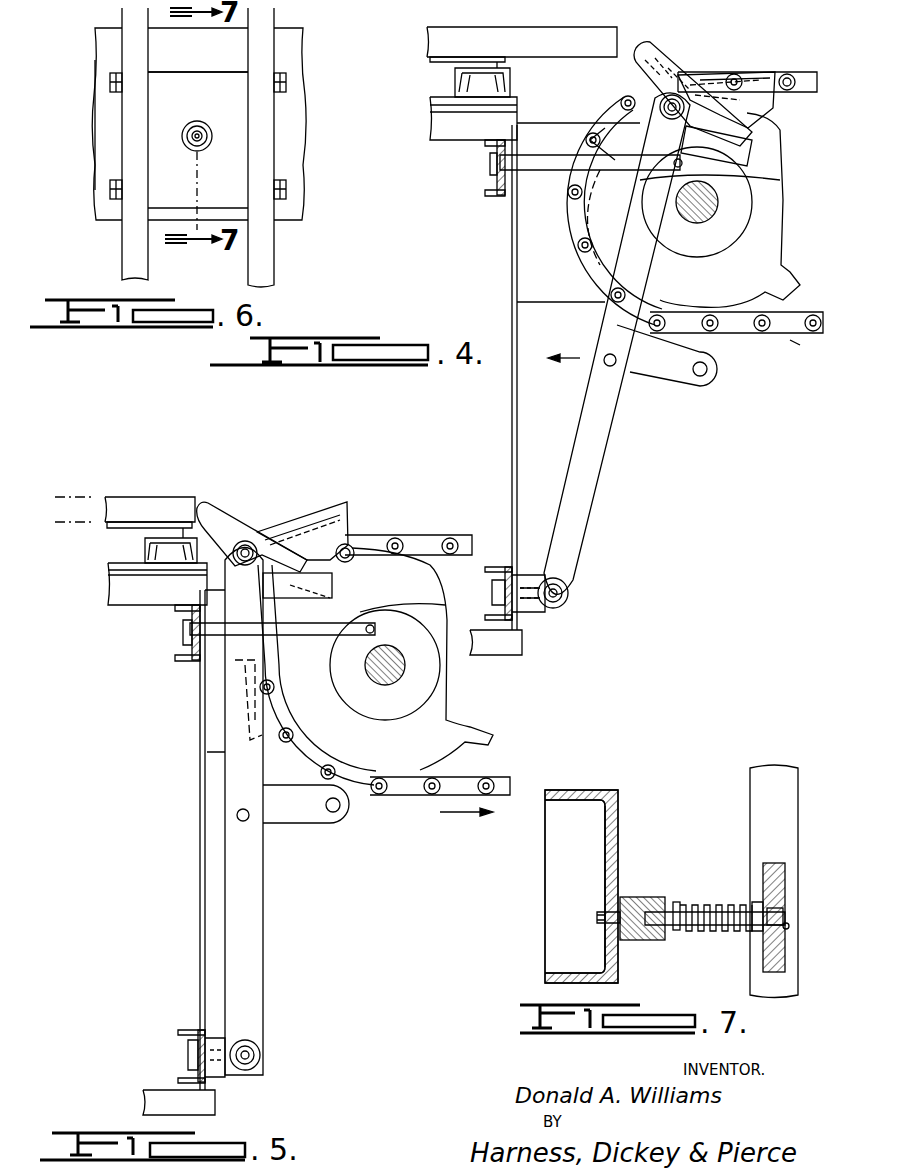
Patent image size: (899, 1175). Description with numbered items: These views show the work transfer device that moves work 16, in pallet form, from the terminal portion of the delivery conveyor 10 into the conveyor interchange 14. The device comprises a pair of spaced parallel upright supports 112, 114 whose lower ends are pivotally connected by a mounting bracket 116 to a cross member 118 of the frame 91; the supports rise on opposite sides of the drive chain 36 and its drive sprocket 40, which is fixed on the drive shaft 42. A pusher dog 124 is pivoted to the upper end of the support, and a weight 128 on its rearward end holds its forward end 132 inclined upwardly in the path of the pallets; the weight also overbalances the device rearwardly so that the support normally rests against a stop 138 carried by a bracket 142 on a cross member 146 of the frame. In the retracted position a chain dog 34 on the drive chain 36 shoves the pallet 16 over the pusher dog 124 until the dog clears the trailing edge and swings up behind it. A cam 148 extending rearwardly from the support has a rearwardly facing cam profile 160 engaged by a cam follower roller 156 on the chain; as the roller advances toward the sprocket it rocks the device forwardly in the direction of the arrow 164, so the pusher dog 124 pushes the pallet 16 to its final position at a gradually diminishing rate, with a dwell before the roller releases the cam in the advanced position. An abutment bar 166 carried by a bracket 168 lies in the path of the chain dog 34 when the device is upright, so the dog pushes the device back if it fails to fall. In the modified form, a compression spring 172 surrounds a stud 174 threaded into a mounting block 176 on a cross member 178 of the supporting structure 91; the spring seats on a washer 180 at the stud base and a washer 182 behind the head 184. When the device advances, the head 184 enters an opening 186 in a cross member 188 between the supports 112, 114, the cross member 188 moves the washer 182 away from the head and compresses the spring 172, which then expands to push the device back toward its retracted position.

In FIG. 4, the delivery conveyor 10 is at (800, 345).
In FIG. 4, the conveyor interchange 14 is at (420, 30).
In FIG. 5, the conveyor interchange 14 is at (110, 482).
In FIG. 4, the work 16 is at (500, 35).
In FIG. 5, the work 16 is at (135, 497).
In FIG. 4, the chain dog 34 is at (620, 88).
In FIG. 5, the chain dog 34 is at (270, 752).
In FIG. 4, the drive chain 36 is at (790, 310).
In FIG. 5, the drive chain 36 is at (435, 540).
In FIG. 4, the drive sprocket 40 is at (760, 238).
In FIG. 5, the drive sprocket 40 is at (448, 728).
In FIG. 4, the drive shaft 42 is at (710, 204).
In FIG. 5, the drive shaft 42 is at (392, 668).
In FIG. 6, the frame 91 is at (315, 126).
In FIG. 4, the frame 91 is at (440, 152).
In FIG. 5, the frame 91 is at (112, 608).
In FIG. 7, the frame 91 is at (592, 778).
In FIG. 6, the upright support 112 is at (132, 246).
In FIG. 4, the upright support 112 is at (605, 462).
In FIG. 5, the upright support 112 is at (265, 892).
In FIG. 6, the upright support 114 is at (265, 259).
In FIG. 7, the upright support 114 is at (765, 770).
In FIG. 4, the mounting bracket 116 is at (530, 612).
In FIG. 5, the mounting bracket 116 is at (225, 1078).
In FIG. 4, the cross member 118 is at (515, 565).
In FIG. 5, the cross member 118 is at (195, 1040).
In FIG. 4, the pusher dog 124 is at (700, 92).
In FIG. 5, the pusher dog 124 is at (218, 518).
In FIG. 4, the weight 128 is at (748, 160).
In FIG. 5, the weight 128 is at (340, 578).
In FIG. 4, the forward end 132 is at (647, 48).
In FIG. 5, the forward end 132 is at (210, 505).
In FIG. 4, the stop 138 is at (760, 181).
In FIG. 5, the stop 138 is at (385, 612).
In FIG. 4, the bracket 142 is at (555, 172).
In FIG. 5, the bracket 142 is at (335, 630).
In FIG. 4, the cross member 146 is at (495, 180).
In FIG. 5, the cross member 146 is at (190, 636).
In FIG. 4, the cam 148 is at (752, 80).
In FIG. 5, the cam 148 is at (300, 530).
In FIG. 4, the cam follower roller 156 is at (790, 72).
In FIG. 5, the cam follower roller 156 is at (350, 545).
In FIG. 4, the cam profile 160 is at (772, 110).
In FIG. 5, the cam profile 160 is at (350, 503).
In FIG. 4, the arrow 164 is at (575, 355).
In FIG. 4, the abutment bar 166 is at (710, 370).
In FIG. 5, the abutment bar 166 is at (340, 812).
In FIG. 4, the bracket 168 is at (665, 367).
In FIG. 5, the bracket 168 is at (295, 815).
In FIG. 7, the compression spring 172 is at (706, 900).
In FIG. 7, the stud 174 is at (700, 925).
In FIG. 7, the mounting block 176 is at (635, 897).
In FIG. 6, the cross member 178 is at (100, 104).
In FIG. 7, the cross member 178 is at (618, 815).
In FIG. 7, the washer 180 is at (680, 902).
In FIG. 7, the washer 182 is at (760, 935).
In FIG. 6, the head 184 is at (200, 130).
In FIG. 7, the head 184 is at (773, 915).
In FIG. 6, the opening 186 is at (195, 150).
In FIG. 7, the opening 186 is at (785, 935).
In FIG. 6, the cross member 188 is at (177, 82).
In FIG. 7, the cross member 188 is at (775, 862).